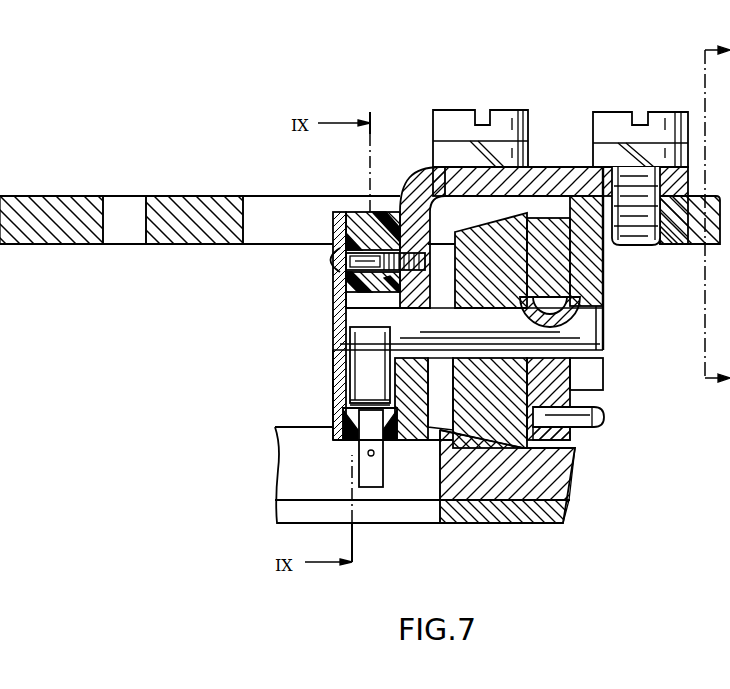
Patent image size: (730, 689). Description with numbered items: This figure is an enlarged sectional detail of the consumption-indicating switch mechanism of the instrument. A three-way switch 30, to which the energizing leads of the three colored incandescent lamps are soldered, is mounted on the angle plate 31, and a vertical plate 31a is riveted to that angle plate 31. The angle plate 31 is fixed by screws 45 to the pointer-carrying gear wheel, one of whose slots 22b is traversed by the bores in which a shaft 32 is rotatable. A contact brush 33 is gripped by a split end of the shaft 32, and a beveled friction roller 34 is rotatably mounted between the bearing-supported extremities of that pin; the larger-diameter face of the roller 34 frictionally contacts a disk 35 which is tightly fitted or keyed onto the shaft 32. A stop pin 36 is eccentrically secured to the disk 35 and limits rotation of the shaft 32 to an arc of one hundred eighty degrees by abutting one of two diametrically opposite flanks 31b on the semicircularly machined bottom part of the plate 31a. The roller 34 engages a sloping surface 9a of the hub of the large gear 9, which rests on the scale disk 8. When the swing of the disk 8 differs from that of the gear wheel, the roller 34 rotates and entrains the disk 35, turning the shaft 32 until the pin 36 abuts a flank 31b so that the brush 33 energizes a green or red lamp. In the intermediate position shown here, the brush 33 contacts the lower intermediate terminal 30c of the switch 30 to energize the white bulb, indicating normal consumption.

The slot 22b is at (255, 200).
The three-way switch 30 is at (355, 210).
The lower intermediate terminal 30c is at (371, 465).
The angle plate 31 is at (556, 172).
The vertical plate 31a is at (590, 276).
The flank 31b is at (420, 432).
The shaft 32 is at (585, 330).
The contact brush 33 is at (358, 348).
The beveled friction roller 34 is at (460, 232).
The disk 35 is at (570, 368).
The stop pin 36 is at (606, 416).
The screw 45 is at (633, 116).
The disk 8 is at (555, 500).
The large gear 9 is at (497, 490).
The sloping surface 9a is at (444, 428).